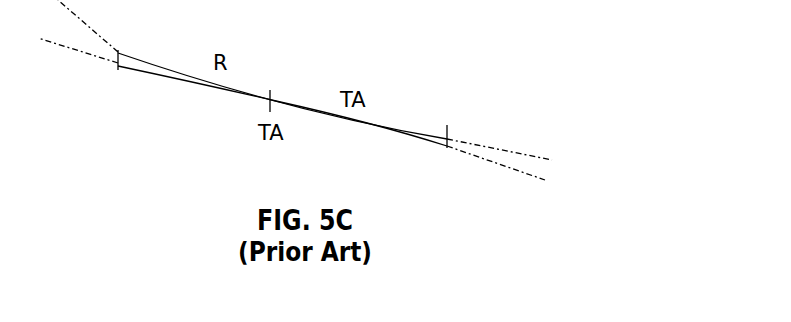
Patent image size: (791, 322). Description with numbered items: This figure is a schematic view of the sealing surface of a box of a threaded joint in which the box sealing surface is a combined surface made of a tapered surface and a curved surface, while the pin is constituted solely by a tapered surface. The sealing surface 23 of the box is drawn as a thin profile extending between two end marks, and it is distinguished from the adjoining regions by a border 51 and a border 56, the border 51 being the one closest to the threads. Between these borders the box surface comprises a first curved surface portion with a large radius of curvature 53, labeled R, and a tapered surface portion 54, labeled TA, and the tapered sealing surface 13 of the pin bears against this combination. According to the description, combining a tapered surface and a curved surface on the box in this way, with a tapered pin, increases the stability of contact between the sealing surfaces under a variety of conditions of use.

The sealing surface of pin 13 is at (252, 102).
The sealing surface of box 23 is at (280, 100).
The border 51 is at (117, 66).
The first curved surface portion with a large radius of curvature 53 is at (186, 84).
The tapered surface portion 54 is at (360, 125).
The border 56 is at (450, 145).